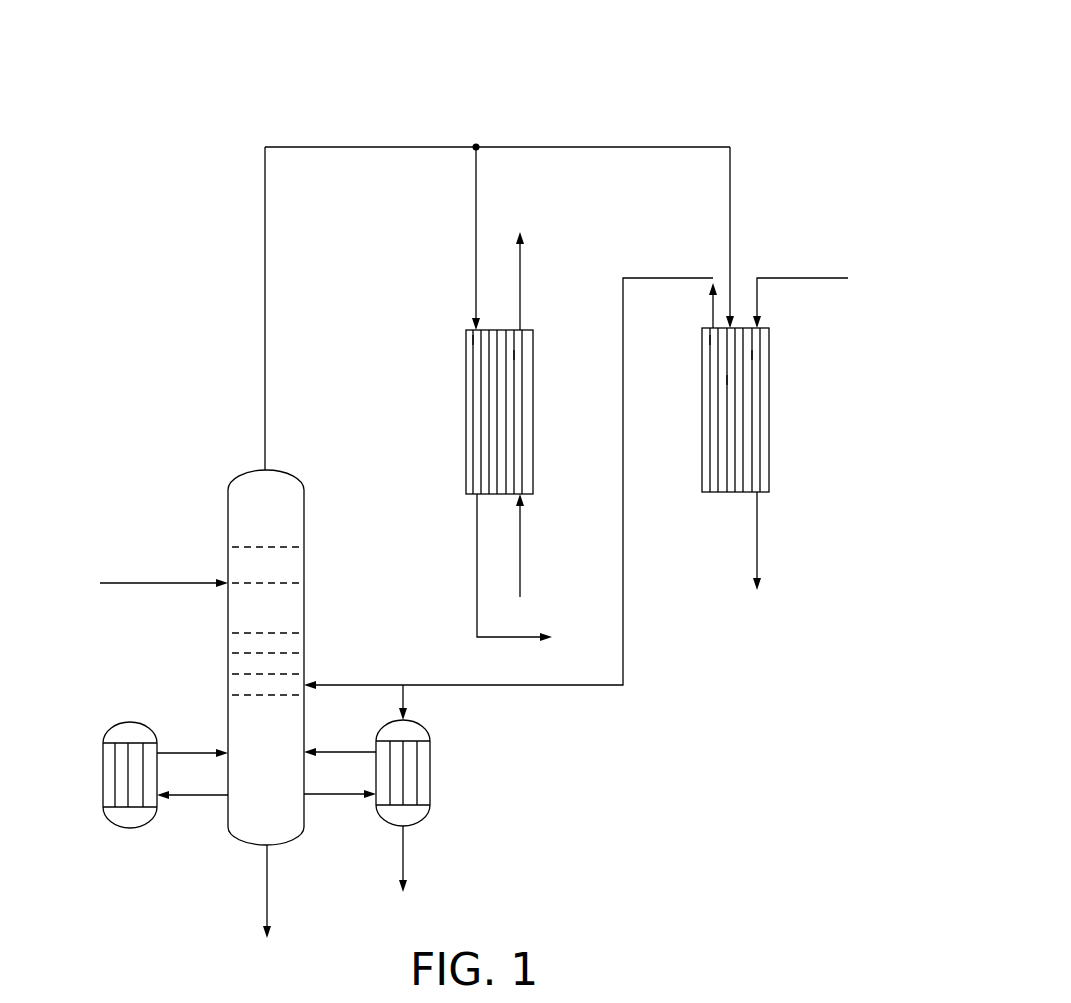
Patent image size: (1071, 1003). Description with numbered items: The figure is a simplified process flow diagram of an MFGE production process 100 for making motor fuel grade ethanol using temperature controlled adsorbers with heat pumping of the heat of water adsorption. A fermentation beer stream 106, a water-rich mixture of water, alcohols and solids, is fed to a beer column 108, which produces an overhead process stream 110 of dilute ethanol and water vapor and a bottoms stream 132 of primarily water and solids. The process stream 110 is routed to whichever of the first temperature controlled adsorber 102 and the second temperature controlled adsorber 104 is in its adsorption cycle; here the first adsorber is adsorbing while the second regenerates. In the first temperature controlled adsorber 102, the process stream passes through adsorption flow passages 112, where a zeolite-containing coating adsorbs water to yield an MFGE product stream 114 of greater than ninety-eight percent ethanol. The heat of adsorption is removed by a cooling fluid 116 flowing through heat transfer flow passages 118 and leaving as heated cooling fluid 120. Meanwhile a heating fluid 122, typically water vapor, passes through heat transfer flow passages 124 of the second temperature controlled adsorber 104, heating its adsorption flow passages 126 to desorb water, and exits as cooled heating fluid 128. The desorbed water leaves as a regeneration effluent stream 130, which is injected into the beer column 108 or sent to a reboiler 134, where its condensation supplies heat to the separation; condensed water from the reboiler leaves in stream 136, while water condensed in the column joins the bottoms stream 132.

The MFGE production process 100 is at (790, 54).
The first temperature controlled adsorber 102 is at (535, 418).
The second temperature controlled adsorber 104 is at (770, 419).
The fermentation beer stream 106 is at (180, 582).
The beer column 108 is at (232, 480).
The process stream 110 is at (370, 147).
The adsorption flow passages 112 is at (476, 340).
The MFGE product stream 114 is at (493, 641).
The cooling fluid 116 is at (521, 552).
The heat transfer flow passages 118 is at (527, 354).
The heated cooling fluid 120 is at (521, 280).
The heating fluid 122 is at (827, 278).
The heat transfer flow passages 124 is at (755, 355).
The adsorption flow passages 126 is at (714, 340).
The cooled heating fluid 128 is at (758, 545).
The regeneration effluent stream 130 is at (660, 278).
The bottoms stream 132 is at (266, 897).
The reboiler 134 is at (102, 774).
The stream 136 is at (405, 839).